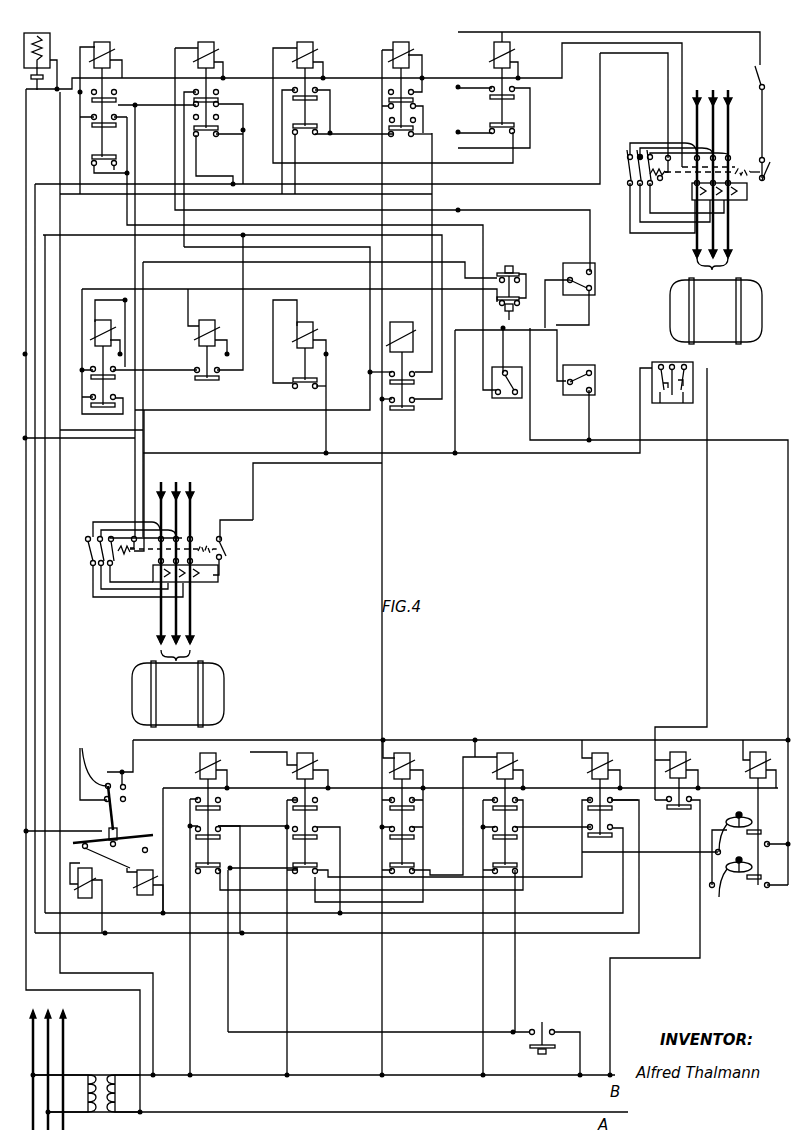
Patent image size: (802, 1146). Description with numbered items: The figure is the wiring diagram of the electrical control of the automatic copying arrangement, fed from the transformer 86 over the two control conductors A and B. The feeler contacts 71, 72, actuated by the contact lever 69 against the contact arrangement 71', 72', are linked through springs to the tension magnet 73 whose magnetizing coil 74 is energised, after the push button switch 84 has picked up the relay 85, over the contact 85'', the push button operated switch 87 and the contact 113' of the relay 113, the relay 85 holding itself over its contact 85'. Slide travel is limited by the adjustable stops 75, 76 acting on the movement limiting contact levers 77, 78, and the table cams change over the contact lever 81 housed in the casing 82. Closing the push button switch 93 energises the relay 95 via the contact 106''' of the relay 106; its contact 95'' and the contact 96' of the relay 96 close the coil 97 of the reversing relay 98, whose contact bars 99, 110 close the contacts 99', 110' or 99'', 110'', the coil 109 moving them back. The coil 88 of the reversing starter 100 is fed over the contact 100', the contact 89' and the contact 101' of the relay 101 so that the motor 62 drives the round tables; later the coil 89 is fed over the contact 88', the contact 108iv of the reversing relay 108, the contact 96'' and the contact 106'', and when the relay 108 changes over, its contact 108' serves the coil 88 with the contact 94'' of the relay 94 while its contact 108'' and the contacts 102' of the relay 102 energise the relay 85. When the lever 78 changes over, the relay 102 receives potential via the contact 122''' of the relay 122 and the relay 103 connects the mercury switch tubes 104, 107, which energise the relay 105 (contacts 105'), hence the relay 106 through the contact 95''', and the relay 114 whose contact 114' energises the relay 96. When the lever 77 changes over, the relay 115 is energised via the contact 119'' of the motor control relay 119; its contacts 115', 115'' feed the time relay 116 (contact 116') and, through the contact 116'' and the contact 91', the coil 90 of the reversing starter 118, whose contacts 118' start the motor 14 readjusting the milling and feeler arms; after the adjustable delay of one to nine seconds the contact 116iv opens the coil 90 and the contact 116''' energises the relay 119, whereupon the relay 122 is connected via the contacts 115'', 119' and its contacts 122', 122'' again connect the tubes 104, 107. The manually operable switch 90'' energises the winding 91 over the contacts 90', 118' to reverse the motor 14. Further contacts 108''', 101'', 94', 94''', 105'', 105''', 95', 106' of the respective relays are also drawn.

The magnetizing coil 74 is at (42, 50).
The tension magnet 73 is at (39, 96).
The relay 122 is at (102, 109).
The contact of relay 122 122' is at (144, 78).
The contact of relay 122 122'' is at (78, 128).
The contact of relay 122 122''' is at (77, 164).
The reversing relay 108 is at (201, 76).
The contact of relay 108 108' is at (226, 152).
The contact of relay 108 108'' is at (233, 137).
The relay contact 108''' is at (179, 102).
The contact of relay 108 108iv is at (212, 135).
The relay 115 is at (393, 93).
The contact of relay 115 115' is at (327, 138).
The contact of relay 115 115'' is at (343, 150).
The time relay 116 is at (402, 76).
The contact of time relay 116 116' is at (385, 93).
The contact of time relay 116 116'' is at (426, 66).
The contact of time relay 116 116''' is at (373, 154).
The contact of time relay 116 116iv is at (412, 136).
The motor control relay 119 is at (521, 80).
The contact of relay 119 119' is at (515, 118).
The contact of relay 119 119'' is at (517, 125).
The coil of reversing starter 118 90 is at (769, 161).
The contact of reversing starter 118 90' is at (776, 182).
The manually operable switch 90'' is at (748, 112).
The winding of reversing starter 118 91 is at (677, 188).
The contact 91' is at (656, 148).
The reversing starter 118 is at (713, 174).
The contacts of reversing starter 118 118' is at (737, 206).
The motor 14 is at (672, 300).
The contact lever 77 is at (582, 268).
The adjustable stop 75 is at (575, 296).
The contact lever 78 is at (575, 368).
The adjustable stop 76 is at (573, 398).
The push button switch 84 is at (509, 266).
The push button operated switch 87 is at (507, 316).
The contact lever 81 is at (512, 368).
The casing 82 is at (503, 410).
The contact lever 69 is at (672, 405).
The feeler contact 71 is at (656, 360).
The contact arrangement 71' is at (659, 439).
The feeler contact 72 is at (707, 387).
The contact arrangement 72' is at (716, 413).
The relay 85 is at (144, 347).
The contact of relay 85 85' is at (139, 380).
The contact of relay 85 85'' is at (122, 351).
The relay 102 is at (210, 337).
The contacts of relay 102 102' is at (219, 318).
The relay 113 is at (306, 341).
The contact of relay 113 113' is at (299, 393).
The relay 101 is at (378, 365).
The contact of relay 101 101' is at (375, 374).
The relay contact 101'' is at (376, 417).
The coil of reversing starter 100 89 is at (115, 488).
The contact 89' is at (138, 573).
The reversing starter 100 is at (189, 571).
The contact 100' is at (211, 573).
The coil of reversing starter 100 88 is at (187, 526).
The contact 88' is at (234, 554).
The motor 62 is at (133, 697).
The reversing relay 98 is at (106, 770).
The contact bar 110 is at (94, 812).
The contacts 110' is at (89, 756).
The contacts 110'' is at (154, 793).
The contact bar 99 is at (105, 843).
The contacts 99' is at (113, 870).
The contacts 99'' is at (166, 857).
The coil of reversing relay 98 97 is at (78, 897).
The coil of reversing relay 98 109 is at (141, 896).
The relay 94 is at (222, 791).
The relay contact 94' is at (234, 803).
The contact of relay 94 94'' is at (236, 872).
The relay contact 94''' is at (238, 856).
The relay 105 is at (310, 791).
The contacts of relay 105 105' is at (332, 801).
The relay contact 105'' is at (333, 824).
The relay contact 105''' is at (338, 856).
The relay 95 is at (406, 791).
The relay contact 95' is at (422, 803).
The contact of relay 95 95'' is at (424, 824).
The contact of relay 95 95''' is at (427, 855).
The relay 106 is at (510, 791).
The relay contact 106' is at (530, 803).
The contact of relay 106 106'' is at (532, 824).
The contact of relay 106 106''' is at (535, 855).
The relay 96 is at (603, 776).
The contact of relay 96 96' is at (619, 784).
The contact of relay 96 96'' is at (604, 850).
The relay 114 is at (681, 757).
The contact of relay 114 114' is at (672, 816).
The relay 103 is at (757, 752).
The mercury switch tube 104 is at (736, 815).
The mercury switch tube 107 is at (736, 880).
The push button switch 93 is at (544, 1054).
The transformer 86 is at (102, 1110).